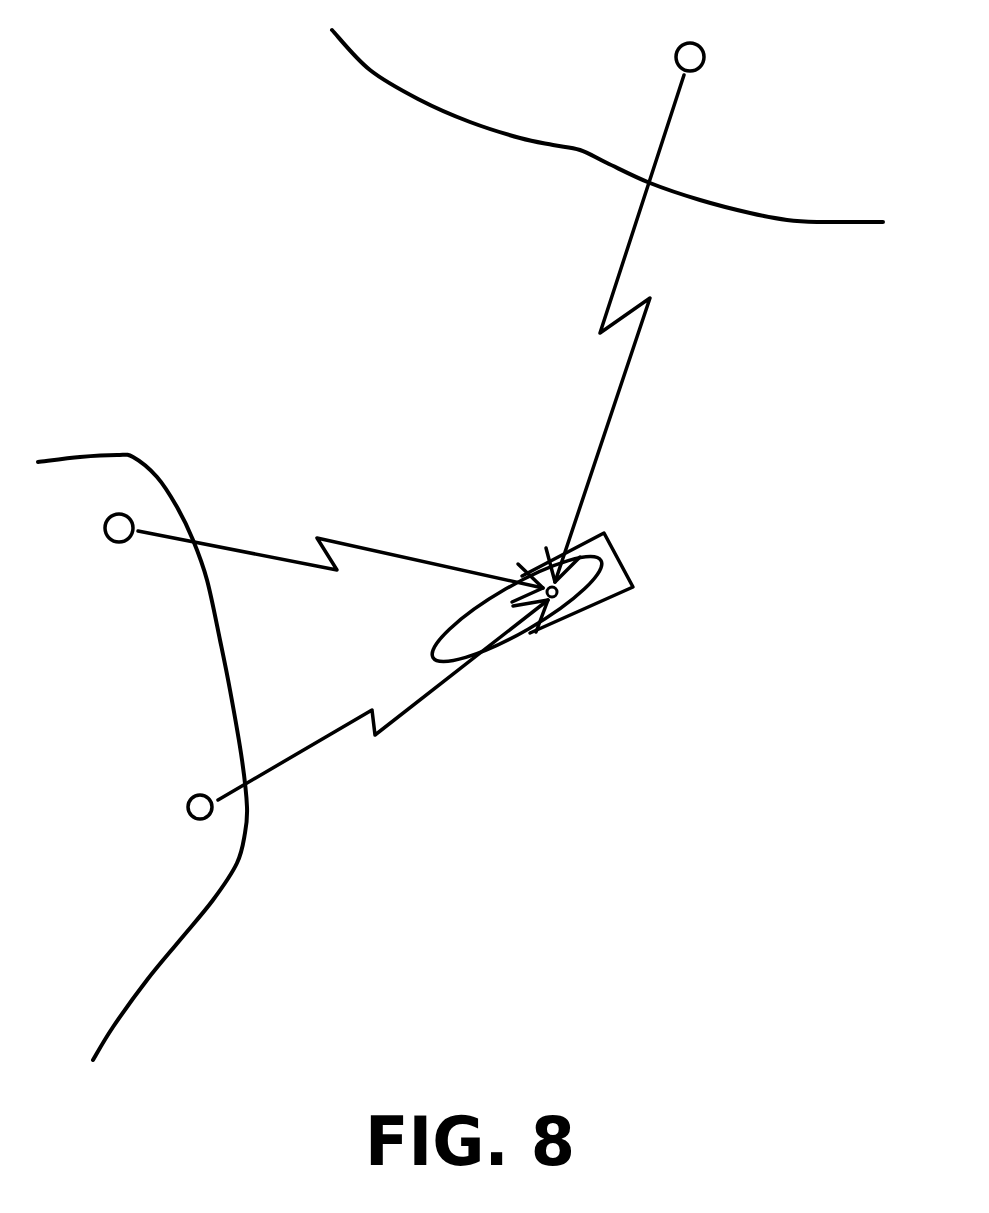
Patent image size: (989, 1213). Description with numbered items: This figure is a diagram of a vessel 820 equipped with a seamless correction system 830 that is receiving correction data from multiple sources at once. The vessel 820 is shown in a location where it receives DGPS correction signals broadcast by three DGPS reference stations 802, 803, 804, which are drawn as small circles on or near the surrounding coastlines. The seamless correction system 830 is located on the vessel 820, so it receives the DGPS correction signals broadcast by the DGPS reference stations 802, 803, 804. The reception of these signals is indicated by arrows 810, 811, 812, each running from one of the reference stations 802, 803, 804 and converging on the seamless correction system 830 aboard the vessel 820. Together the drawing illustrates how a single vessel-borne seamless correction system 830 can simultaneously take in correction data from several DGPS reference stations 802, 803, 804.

The DGPS reference station 802 is at (105, 528).
The DGPS reference station 803 is at (188, 805).
The DGPS reference station 804 is at (704, 52).
The arrow 810 is at (290, 750).
The arrow 811 is at (250, 550).
The arrow 812 is at (640, 318).
The vessel 820 is at (620, 557).
The seamless correction system 830 is at (552, 597).